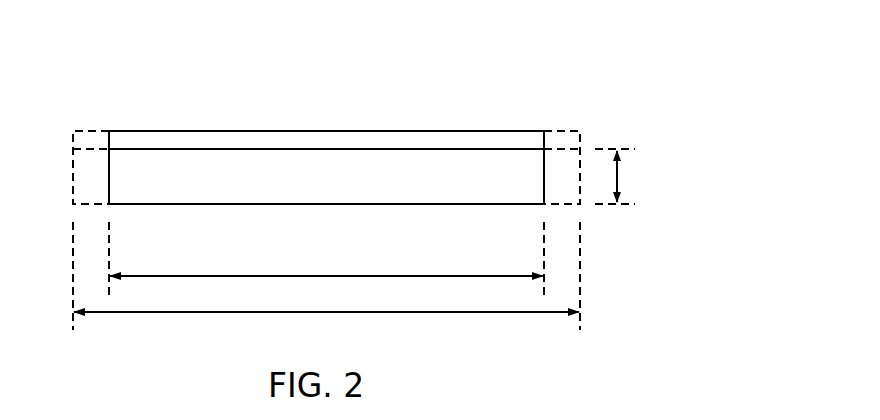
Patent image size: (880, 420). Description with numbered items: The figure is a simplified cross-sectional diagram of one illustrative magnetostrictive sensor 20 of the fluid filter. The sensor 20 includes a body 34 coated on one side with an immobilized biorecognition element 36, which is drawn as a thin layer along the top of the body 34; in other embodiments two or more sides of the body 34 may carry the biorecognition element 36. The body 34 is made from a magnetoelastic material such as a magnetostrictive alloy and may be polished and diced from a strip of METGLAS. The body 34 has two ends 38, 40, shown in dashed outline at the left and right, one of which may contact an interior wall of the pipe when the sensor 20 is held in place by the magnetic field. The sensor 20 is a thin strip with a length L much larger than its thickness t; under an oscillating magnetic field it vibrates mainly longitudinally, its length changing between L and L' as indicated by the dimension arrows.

The magnetostrictive sensor 20 is at (744, 70).
The body 34 is at (162, 168).
The immobilized biorecognition element 36 is at (216, 142).
The end 38 is at (51, 119).
The end 40 is at (601, 124).